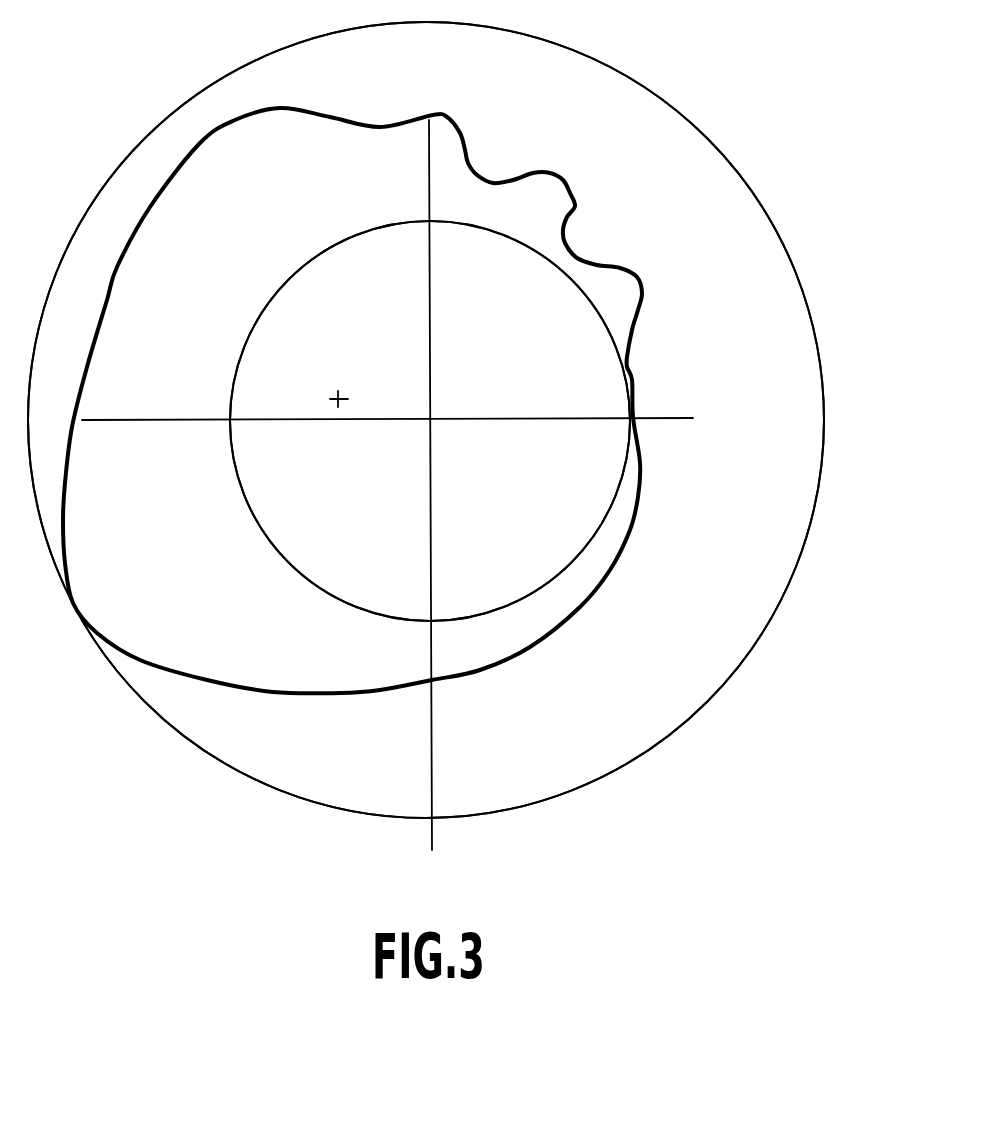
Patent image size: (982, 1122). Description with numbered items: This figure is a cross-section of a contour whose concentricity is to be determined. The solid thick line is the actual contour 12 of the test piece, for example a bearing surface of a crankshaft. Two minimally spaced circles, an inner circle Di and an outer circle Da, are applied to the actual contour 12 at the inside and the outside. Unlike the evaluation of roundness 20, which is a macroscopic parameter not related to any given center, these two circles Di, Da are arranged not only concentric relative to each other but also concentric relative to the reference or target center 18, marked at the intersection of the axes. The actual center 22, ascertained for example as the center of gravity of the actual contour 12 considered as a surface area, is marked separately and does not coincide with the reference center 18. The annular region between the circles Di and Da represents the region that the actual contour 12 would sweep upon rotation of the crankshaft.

The actual contour 12 is at (576, 207).
The reference or target center 18 is at (430, 420).
The roundness 20 is at (820, 532).
The actual center 22 is at (337, 394).
The outer circle Da is at (769, 216).
The inner circle Di is at (241, 492).